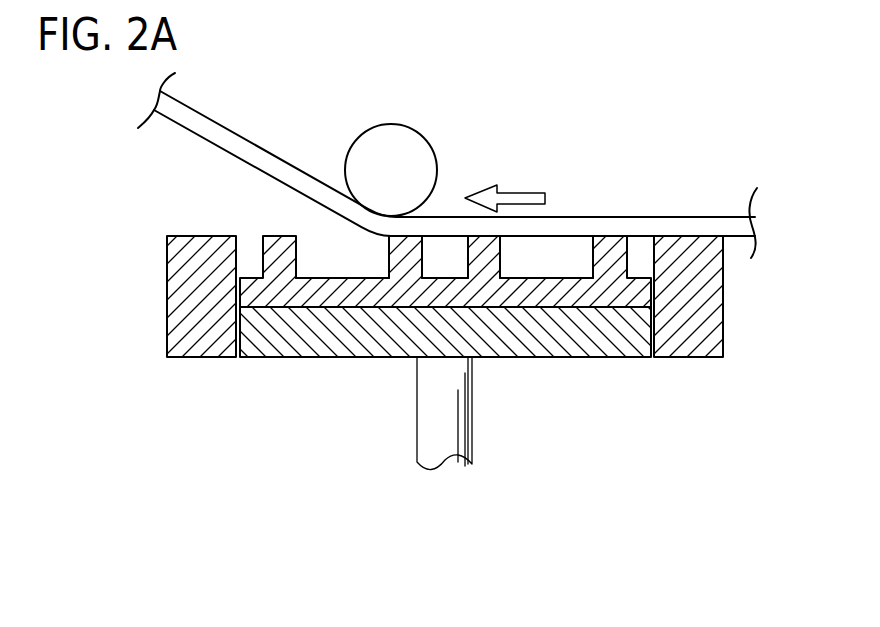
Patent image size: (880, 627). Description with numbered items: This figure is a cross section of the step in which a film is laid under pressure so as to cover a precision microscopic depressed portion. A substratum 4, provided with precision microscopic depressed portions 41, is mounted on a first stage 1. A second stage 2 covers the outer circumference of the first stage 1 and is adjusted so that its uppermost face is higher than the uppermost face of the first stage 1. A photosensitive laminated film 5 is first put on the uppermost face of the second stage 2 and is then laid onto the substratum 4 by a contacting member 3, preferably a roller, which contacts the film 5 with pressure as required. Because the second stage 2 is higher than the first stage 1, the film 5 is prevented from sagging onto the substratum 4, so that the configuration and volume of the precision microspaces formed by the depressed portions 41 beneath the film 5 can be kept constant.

The first stage 1 is at (290, 340).
The second stage 2 is at (209, 350).
The contacting member 3 is at (407, 135).
The substratum 4 is at (278, 233).
The precision microscopic depressed portion 41 is at (341, 271).
The photosensitive laminated film 5 is at (687, 225).